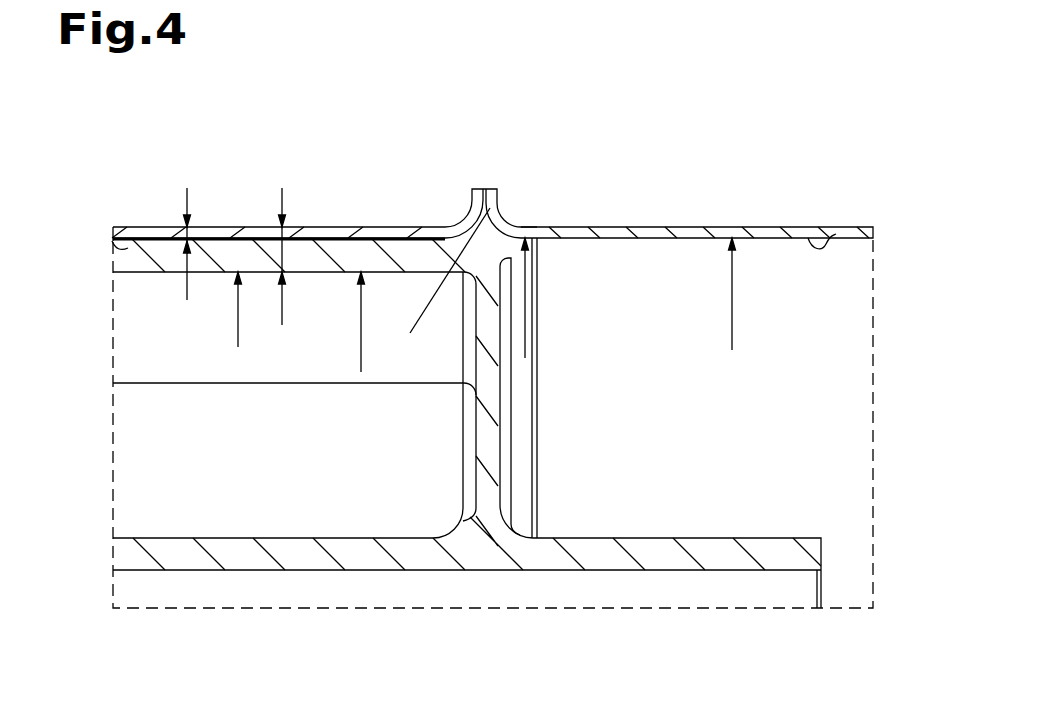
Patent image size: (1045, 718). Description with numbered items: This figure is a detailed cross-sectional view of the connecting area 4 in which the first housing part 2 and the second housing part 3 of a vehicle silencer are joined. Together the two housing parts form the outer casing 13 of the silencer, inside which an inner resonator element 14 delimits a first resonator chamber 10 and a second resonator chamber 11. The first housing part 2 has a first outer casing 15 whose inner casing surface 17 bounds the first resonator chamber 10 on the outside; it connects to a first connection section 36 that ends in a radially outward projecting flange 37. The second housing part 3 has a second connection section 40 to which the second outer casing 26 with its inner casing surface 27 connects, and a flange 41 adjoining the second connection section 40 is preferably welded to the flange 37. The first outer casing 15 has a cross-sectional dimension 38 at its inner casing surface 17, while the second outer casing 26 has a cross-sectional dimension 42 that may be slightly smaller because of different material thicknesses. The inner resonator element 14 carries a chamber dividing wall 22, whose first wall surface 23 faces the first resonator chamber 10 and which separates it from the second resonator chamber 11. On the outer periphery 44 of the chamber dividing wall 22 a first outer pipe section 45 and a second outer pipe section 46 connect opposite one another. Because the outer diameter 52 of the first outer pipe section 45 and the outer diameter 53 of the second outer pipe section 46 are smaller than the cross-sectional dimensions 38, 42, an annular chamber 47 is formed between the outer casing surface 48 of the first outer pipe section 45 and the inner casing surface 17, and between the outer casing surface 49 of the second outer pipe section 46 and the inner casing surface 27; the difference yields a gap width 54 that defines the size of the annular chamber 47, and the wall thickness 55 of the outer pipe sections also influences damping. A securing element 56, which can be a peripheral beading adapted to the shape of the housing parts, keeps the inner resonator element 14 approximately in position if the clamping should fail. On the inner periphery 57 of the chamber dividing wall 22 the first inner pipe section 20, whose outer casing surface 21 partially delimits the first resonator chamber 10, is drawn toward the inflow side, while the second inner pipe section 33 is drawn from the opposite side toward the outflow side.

The first housing part 2 is at (718, 227).
The second housing part 3 is at (167, 227).
The connecting area 4 is at (487, 188).
The first resonator chamber 10 is at (823, 297).
The second resonator chamber 11 is at (240, 506).
The outer casing 13 is at (650, 212).
The inner resonator element 14 is at (546, 321).
The first outer casing 15 is at (792, 227).
The inner casing surface 17 is at (831, 227).
The first inner pipe section 20 is at (660, 560).
The outer casing surface 21 is at (756, 535).
The chamber dividing wall 22 is at (535, 387).
The first wall surface 23 is at (534, 447).
The second outer casing 26 is at (149, 230).
The second inner casing surface 27 is at (110, 242).
The second inner pipe section 33 is at (305, 557).
The first connection section 36 is at (522, 176).
The flange 37 is at (492, 209).
The cross-sectional dimension 38 is at (736, 331).
The second connection section 40 is at (456, 196).
The flange 41 is at (455, 221).
The cross-sectional dimension 42 is at (236, 333).
The outer periphery 44 is at (458, 227).
The first outer pipe section 45 is at (536, 248).
The second outer pipe section 46 is at (341, 237).
The annular chamber 47 is at (398, 238).
The outer casing surface 48 is at (533, 229).
The outer casing surface 49 is at (259, 237).
The outer diameter 52 is at (540, 220).
The outer diameter 53 is at (359, 361).
The gap width 54 is at (189, 207).
The wall thickness 55 is at (284, 201).
The securing element 56 is at (439, 287).
The inner periphery 57 is at (548, 520).